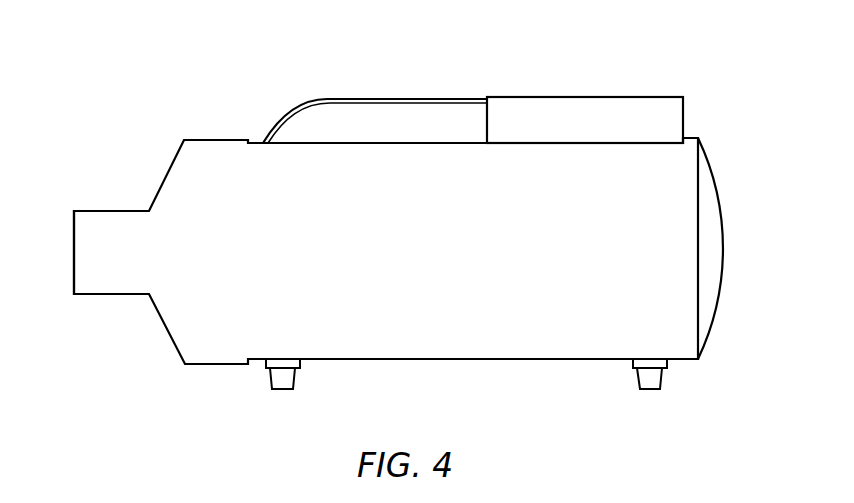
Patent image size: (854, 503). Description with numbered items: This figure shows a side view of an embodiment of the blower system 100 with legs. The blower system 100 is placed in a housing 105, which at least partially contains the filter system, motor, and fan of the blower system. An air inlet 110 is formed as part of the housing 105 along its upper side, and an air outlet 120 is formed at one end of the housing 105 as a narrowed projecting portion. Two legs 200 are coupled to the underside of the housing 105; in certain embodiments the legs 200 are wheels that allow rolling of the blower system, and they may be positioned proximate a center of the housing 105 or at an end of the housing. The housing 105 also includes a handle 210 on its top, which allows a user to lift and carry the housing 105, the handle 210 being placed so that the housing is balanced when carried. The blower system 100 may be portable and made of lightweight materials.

The blower system 100 is at (401, 228).
The housing 105 is at (663, 337).
The air inlet 110 is at (487, 132).
The air outlet 120 is at (114, 295).
The legs 200 is at (283, 378).
The handle 210 is at (360, 97).